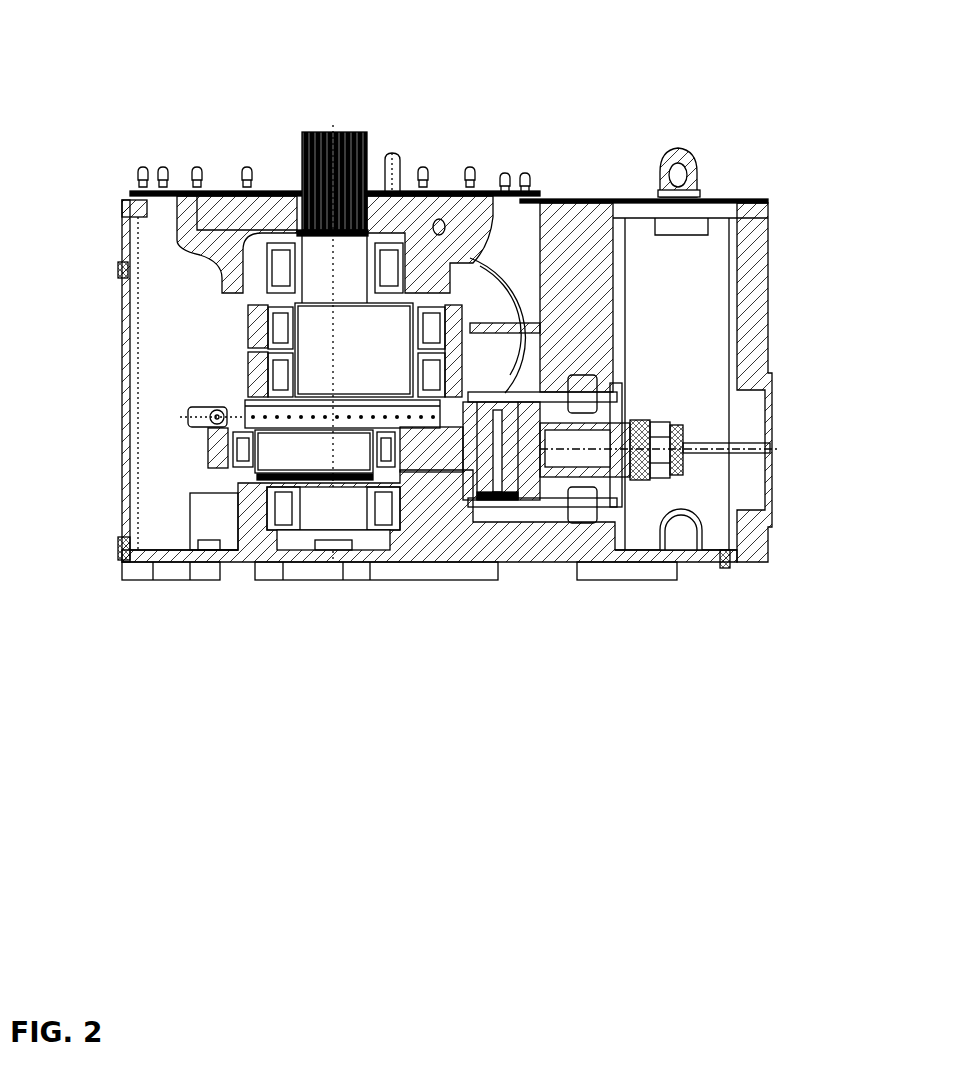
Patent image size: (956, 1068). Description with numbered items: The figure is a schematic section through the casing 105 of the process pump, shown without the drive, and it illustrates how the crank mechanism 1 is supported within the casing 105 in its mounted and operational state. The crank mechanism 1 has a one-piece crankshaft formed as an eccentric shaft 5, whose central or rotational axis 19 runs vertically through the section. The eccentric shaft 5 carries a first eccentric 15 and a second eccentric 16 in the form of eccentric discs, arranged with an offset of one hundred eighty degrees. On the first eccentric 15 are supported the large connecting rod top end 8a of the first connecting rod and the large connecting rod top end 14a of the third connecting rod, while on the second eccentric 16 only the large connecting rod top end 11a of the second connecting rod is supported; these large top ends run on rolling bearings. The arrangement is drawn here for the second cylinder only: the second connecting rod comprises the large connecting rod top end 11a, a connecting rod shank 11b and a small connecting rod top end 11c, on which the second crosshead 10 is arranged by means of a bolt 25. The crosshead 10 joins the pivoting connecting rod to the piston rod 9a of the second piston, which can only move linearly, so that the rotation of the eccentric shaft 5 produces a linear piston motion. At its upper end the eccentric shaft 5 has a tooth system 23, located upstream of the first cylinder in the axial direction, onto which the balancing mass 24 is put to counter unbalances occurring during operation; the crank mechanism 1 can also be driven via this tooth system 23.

The crank mechanism 1 is at (232, 326).
The eccentric shaft 5 is at (342, 515).
The large connecting rod top end 8a is at (250, 324).
The piston rod 9a is at (705, 445).
The second crosshead 10 is at (620, 415).
The large connecting rod top end 11a is at (225, 460).
The connecting rod shank 11b is at (447, 462).
The small connecting rod top end 11c is at (520, 470).
The large connecting rod top end 14a is at (250, 370).
The first eccentric 15 is at (354, 350).
The second eccentric 16 is at (314, 455).
The central or rotational axis 19 is at (333, 587).
The tooth system 23 is at (322, 132).
The balancing mass 24 is at (210, 228).
The bolt 25 is at (515, 493).
The casing 105 is at (572, 200).